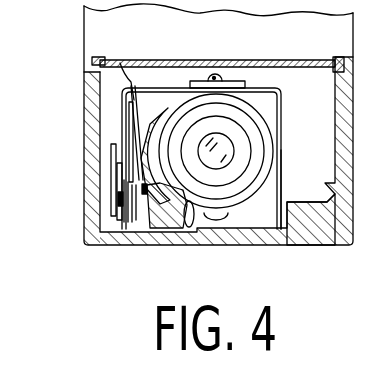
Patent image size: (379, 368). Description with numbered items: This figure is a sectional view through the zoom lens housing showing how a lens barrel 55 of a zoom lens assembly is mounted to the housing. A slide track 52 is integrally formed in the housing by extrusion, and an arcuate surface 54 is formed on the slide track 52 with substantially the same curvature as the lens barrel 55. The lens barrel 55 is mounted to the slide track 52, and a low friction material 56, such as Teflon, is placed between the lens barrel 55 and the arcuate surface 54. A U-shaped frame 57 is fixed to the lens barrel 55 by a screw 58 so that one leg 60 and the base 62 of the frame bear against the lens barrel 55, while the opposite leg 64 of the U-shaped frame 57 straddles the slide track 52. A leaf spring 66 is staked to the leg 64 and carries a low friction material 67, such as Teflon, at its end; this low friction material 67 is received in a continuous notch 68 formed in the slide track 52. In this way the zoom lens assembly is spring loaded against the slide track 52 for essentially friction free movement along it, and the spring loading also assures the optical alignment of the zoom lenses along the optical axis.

The slide track 52 is at (151, 112).
The arcuate surface 54 is at (190, 212).
The lens barrel 55 is at (260, 100).
The low friction material 56 is at (178, 115).
The U-shaped frame 57 is at (282, 128).
The screw 58 is at (231, 66).
The leg 60 is at (281, 178).
The base 62 is at (120, 63).
The opposite leg 64 is at (122, 100).
The leaf spring 66 is at (136, 139).
The low friction material 67 is at (139, 200).
The continuous notch 68 is at (147, 186).